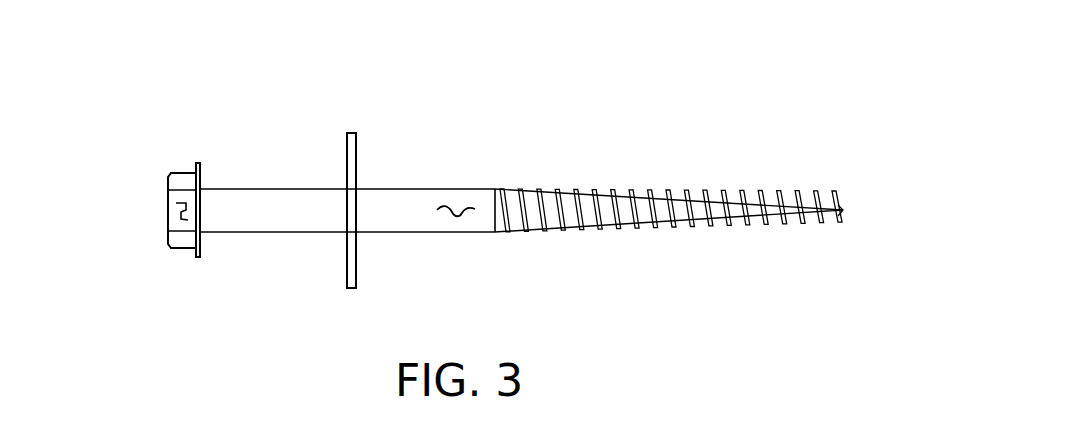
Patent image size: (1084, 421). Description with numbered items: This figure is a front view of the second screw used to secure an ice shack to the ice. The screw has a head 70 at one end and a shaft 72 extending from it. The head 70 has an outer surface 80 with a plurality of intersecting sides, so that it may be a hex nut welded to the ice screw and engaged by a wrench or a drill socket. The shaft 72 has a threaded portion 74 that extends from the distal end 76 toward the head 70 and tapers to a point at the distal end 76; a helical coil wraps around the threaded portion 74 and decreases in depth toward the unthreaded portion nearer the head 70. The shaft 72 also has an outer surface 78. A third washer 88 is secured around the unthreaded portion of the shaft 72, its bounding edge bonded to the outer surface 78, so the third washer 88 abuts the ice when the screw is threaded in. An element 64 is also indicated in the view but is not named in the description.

The fastener 64 is at (418, 170).
The head 70 is at (168, 198).
The shaft 72 is at (427, 233).
The threaded portion 74 is at (645, 189).
The distal end 76 is at (388, 171).
The outer surface 78 is at (458, 212).
The outer surface 80 is at (177, 209).
The third washer 88 is at (351, 288).